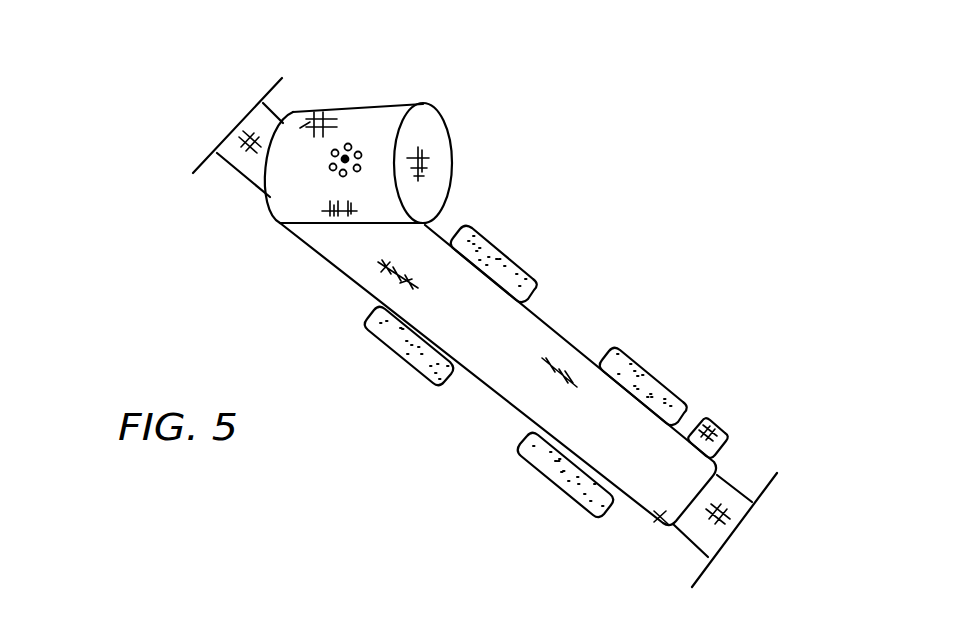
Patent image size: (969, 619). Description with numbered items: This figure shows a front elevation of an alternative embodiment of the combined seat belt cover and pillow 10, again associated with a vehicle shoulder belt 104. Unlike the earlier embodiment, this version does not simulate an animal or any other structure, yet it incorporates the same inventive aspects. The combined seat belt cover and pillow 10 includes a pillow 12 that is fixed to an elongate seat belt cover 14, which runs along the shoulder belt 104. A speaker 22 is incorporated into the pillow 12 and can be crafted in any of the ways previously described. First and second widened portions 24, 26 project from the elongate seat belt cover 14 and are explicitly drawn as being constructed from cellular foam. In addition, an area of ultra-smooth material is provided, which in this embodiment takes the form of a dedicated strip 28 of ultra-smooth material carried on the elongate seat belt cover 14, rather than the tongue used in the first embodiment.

The combined seat belt cover and pillow 10 is at (705, 195).
The pillow 12 is at (452, 148).
The elongate seat belt cover 14 is at (495, 394).
The speaker 22 is at (348, 143).
The first widened portion 24 is at (483, 233).
The second widened portion 26 is at (635, 353).
The strip of ultra-smooth material 28 is at (720, 413).
The shoulder belt 104 is at (247, 175).